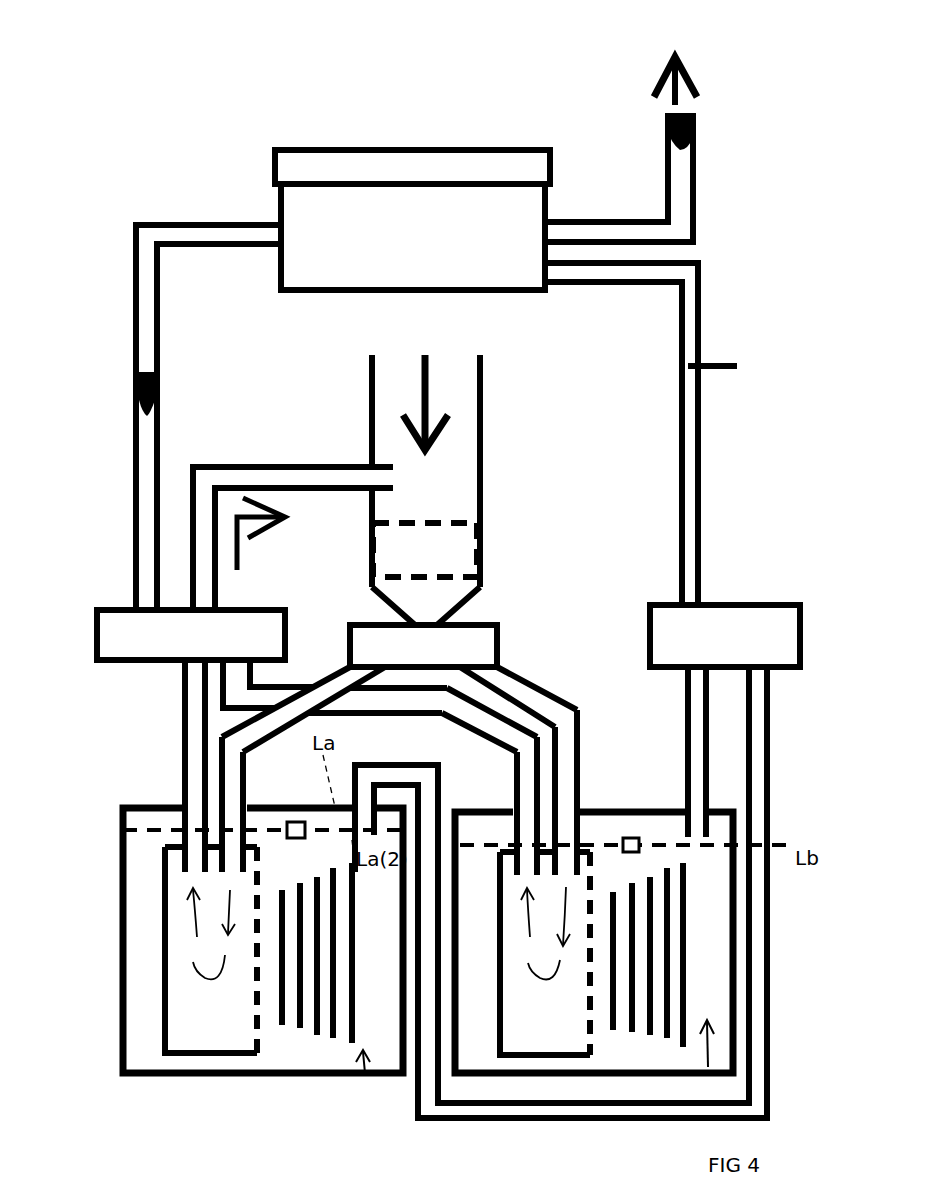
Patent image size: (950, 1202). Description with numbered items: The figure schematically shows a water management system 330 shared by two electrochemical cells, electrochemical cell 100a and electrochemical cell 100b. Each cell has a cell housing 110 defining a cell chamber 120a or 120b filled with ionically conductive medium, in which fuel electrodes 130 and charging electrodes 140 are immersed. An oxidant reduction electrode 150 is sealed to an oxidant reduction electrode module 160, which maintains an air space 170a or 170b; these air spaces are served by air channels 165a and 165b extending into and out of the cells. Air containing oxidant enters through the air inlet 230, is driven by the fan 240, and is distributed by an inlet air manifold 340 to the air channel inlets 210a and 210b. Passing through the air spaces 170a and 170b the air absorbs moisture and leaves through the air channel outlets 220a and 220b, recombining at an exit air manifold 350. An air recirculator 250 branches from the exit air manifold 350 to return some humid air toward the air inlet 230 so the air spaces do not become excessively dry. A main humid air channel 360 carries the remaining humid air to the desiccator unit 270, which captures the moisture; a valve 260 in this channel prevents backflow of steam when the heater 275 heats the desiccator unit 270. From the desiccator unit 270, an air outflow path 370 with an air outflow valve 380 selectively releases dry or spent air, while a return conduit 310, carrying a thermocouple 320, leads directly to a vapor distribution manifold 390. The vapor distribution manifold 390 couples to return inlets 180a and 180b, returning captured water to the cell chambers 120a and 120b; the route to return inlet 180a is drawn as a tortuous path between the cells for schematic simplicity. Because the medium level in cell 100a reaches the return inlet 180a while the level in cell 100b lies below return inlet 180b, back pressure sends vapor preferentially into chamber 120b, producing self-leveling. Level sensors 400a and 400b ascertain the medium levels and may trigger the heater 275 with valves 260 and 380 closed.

The water management system 330 is at (90, 98).
The heater 275 is at (392, 170).
The desiccator unit 270 is at (386, 268).
The main humid air channel 360 is at (147, 334).
The valve 260 is at (133, 384).
The air outflow path 370 is at (695, 228).
The air outflow valve 380 is at (698, 135).
The return conduit 310 is at (700, 320).
The thermocouple 320 is at (718, 370).
The vapor distribution manifold 390 is at (740, 623).
The air inlet 230 is at (457, 367).
The air recirculator 250 is at (243, 477).
The fan 240 is at (470, 575).
The inlet air manifold 340 is at (497, 626).
The exit air manifold 350 is at (97, 640).
The air channel inlet 210a is at (257, 813).
The air channel inlet 210b is at (578, 812).
The air channel 165a is at (233, 810).
The air channel 165b is at (565, 808).
The cell housing 110 is at (292, 810).
The electrochemical cell 100a is at (100, 803).
The electrochemical cell 100b is at (628, 784).
The air channel outlet 220a is at (190, 842).
The air channel outlet 220b is at (490, 863).
The level sensor 400a is at (296, 838).
The level sensor 400b is at (627, 853).
The return inlet 180a is at (367, 787).
The return inlet 180b is at (697, 803).
The oxidant reduction electrode module 160 is at (163, 990).
The oxidant reduction electrode 150 is at (257, 1007).
The air space 170a is at (192, 1030).
The air space 170b is at (532, 1030).
The charging electrode 140 is at (282, 1005).
The fuel electrode 130 is at (315, 1005).
The cell chamber 120a is at (362, 1056).
The cell chamber 120b is at (693, 1082).